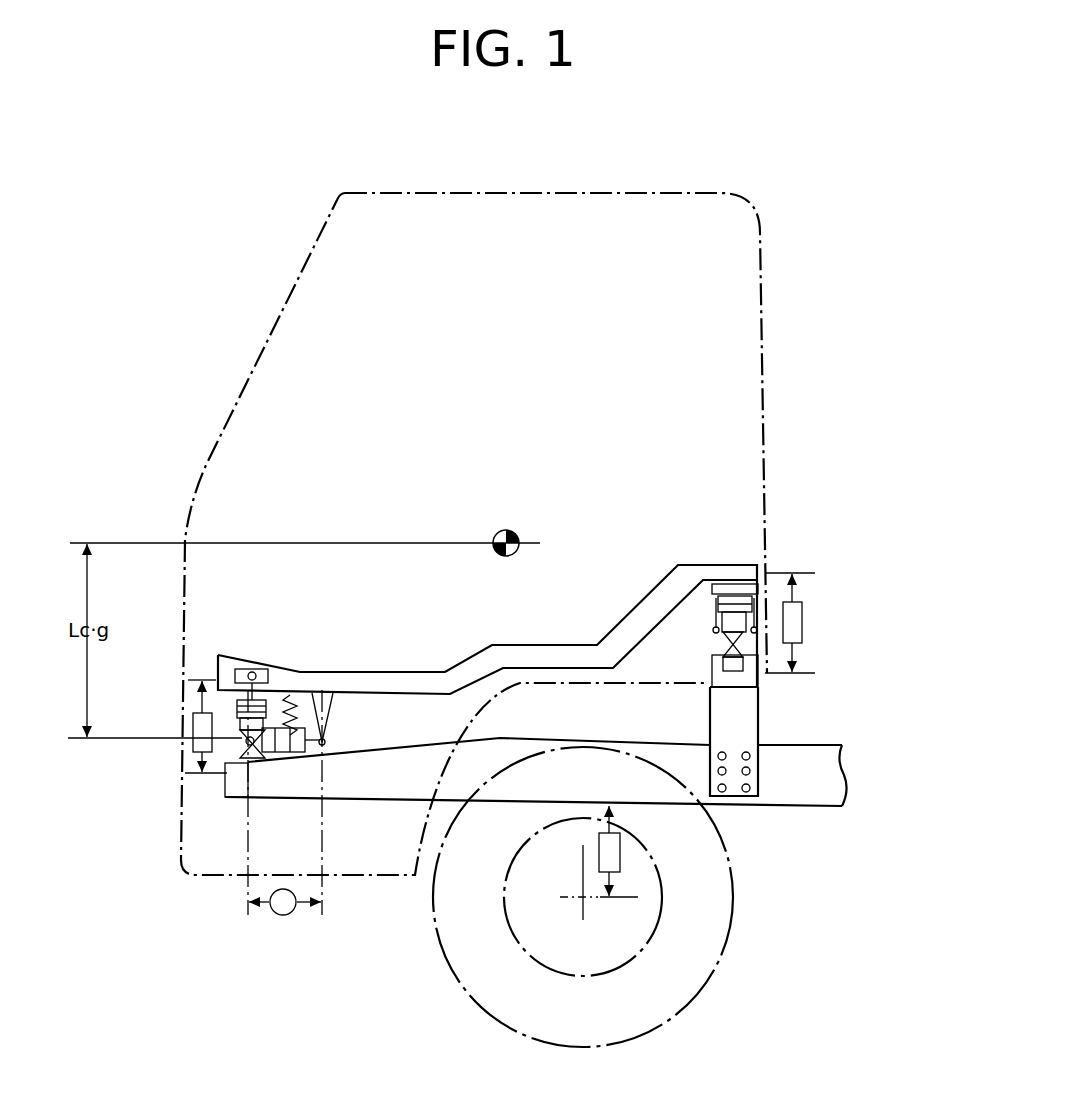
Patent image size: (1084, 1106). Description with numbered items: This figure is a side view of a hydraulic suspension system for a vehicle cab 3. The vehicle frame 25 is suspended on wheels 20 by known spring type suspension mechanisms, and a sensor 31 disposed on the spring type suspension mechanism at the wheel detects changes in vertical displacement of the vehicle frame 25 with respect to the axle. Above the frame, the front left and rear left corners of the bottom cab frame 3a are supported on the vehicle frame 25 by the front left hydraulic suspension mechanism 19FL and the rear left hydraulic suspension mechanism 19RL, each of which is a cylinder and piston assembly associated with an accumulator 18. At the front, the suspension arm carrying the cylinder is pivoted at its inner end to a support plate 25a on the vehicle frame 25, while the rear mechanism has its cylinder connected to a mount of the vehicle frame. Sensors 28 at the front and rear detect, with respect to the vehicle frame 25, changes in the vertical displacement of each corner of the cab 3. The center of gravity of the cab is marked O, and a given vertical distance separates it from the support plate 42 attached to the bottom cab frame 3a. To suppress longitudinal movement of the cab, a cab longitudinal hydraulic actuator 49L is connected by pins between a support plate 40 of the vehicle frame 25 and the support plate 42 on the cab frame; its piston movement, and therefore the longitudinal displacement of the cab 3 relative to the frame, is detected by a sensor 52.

The cab 3 is at (207, 463).
The center of gravity O is at (503, 534).
The bottom cab frame 3a is at (467, 673).
The accumulator 18 is at (297, 693).
The front left hydraulic suspension mechanism 19FL is at (232, 707).
The rear left hydraulic suspension mechanism 19RL is at (715, 645).
The sensor 28 is at (203, 732).
The support plate 42 is at (337, 717).
The support plate 40 is at (243, 800).
The first cab longitudinal hydraulic actuator 49L is at (285, 766).
The vehicle frame 25 is at (795, 796).
The support plate 25a is at (742, 713).
The wheel 20 is at (718, 910).
The sensor 31 is at (600, 865).
The sensor 52 is at (286, 915).